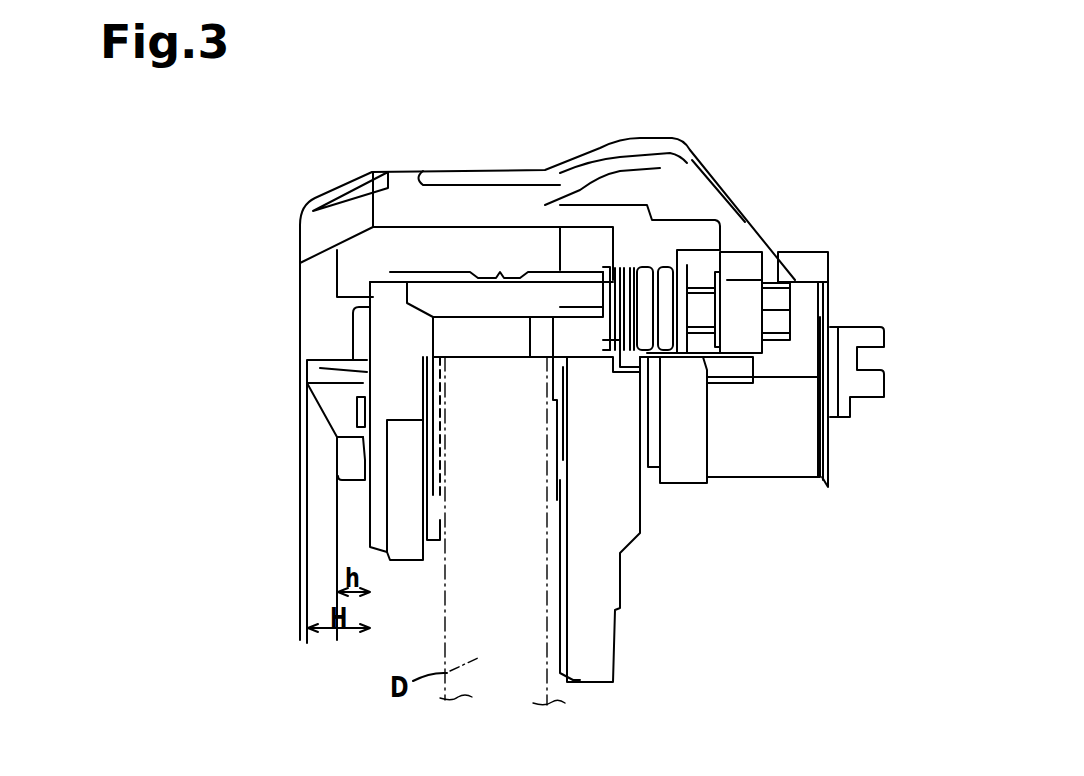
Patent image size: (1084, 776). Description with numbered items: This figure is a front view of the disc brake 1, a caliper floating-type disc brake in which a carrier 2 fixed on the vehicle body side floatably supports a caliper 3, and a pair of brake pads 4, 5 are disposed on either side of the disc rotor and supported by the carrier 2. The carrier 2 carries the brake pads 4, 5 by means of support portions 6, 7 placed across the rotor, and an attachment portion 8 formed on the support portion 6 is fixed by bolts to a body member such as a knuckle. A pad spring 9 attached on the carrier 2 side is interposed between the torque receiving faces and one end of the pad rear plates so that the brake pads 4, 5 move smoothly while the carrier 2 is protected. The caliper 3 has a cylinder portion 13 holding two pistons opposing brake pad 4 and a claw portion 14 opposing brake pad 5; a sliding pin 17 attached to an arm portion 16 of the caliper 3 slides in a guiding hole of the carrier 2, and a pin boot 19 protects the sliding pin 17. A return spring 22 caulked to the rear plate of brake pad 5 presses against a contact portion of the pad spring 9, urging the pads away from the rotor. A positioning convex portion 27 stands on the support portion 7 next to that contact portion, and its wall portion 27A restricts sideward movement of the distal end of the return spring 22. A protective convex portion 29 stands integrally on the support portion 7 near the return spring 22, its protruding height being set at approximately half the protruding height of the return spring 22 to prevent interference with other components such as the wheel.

The disc brake 1 is at (746, 178).
The carrier 2 is at (607, 473).
The caliper 3 is at (415, 192).
The brake pad 4 is at (545, 443).
The brake pad 5 is at (440, 463).
The support portion 6 is at (607, 428).
The support portion 7 is at (412, 547).
The attachment portion 8 is at (597, 658).
The pad spring 9 is at (392, 282).
The cylinder portion 13 is at (797, 457).
The claw portion 14 is at (310, 345).
The arm portion 16 is at (737, 300).
The sliding pin 17 is at (778, 312).
The pin boot 19 is at (673, 275).
The return spring 22 is at (317, 373).
The positioning convex portion 27 is at (360, 330).
The wall portion 27A is at (353, 360).
The protective convex portion 29 is at (337, 453).